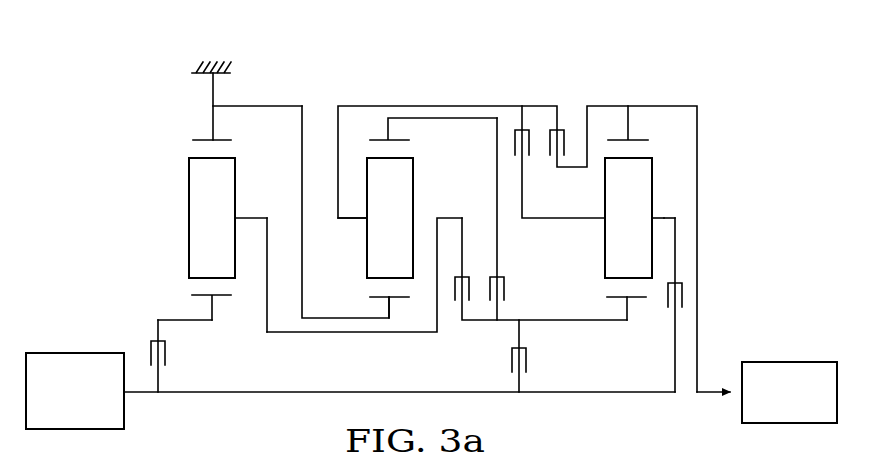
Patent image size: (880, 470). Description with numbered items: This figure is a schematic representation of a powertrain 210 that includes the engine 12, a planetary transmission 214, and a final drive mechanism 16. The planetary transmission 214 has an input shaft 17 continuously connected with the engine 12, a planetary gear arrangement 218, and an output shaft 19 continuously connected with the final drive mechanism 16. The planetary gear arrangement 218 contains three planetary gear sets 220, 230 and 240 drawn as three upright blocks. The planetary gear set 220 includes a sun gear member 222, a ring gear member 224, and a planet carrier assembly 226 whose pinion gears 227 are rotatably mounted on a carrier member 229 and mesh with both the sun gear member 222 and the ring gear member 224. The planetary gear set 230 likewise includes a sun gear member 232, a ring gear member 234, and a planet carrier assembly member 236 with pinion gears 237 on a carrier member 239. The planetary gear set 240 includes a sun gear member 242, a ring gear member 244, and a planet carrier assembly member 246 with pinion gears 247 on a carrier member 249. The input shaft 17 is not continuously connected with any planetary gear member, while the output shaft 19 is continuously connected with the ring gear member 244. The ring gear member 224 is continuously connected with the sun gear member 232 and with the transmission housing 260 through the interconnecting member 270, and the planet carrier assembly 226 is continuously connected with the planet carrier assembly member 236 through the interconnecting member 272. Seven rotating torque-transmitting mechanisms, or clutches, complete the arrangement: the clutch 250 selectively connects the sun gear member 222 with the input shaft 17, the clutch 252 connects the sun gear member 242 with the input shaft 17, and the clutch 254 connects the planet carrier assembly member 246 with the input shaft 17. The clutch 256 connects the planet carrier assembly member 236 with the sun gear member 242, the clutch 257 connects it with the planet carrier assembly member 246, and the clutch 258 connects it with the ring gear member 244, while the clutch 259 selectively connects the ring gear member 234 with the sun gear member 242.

The engine 12 is at (92, 338).
The final drive mechanism 16 is at (775, 343).
The input shaft 17 is at (133, 395).
The output shaft 19 is at (712, 395).
The powertrain 210 is at (137, 200).
The planetary transmission 214 is at (301, 163).
The planetary gear arrangement 218 is at (408, 84).
The planetary gear set 220 is at (204, 300).
The sun gear member 222 is at (222, 300).
The ring gear member 224 is at (210, 136).
The planet carrier assembly 226 is at (240, 210).
The pinion gears 227 is at (212, 218).
The carrier member 229 is at (262, 217).
The planetary gear set 230 is at (378, 300).
The sun gear member 232 is at (400, 300).
The ring gear member 234 is at (381, 136).
The planet carrier assembly member 236 is at (365, 228).
The pinion gears 237 is at (390, 218).
The carrier member 239 is at (364, 220).
The planetary gear set 240 is at (618, 300).
The sun gear member 242 is at (640, 300).
The ring gear member 244 is at (628, 138).
The planet carrier assembly member 246 is at (658, 211).
The pinion gears 247 is at (628, 218).
The carrier member 249 is at (661, 220).
The clutch 250 is at (152, 336).
The clutch 252 is at (531, 376).
The clutch 254 is at (689, 281).
The clutch 256 is at (478, 304).
The clutch 257 is at (514, 121).
The clutch 258 is at (549, 121).
The clutch 259 is at (508, 280).
The transmission housing 260 is at (199, 60).
The interconnecting member 270 is at (274, 105).
The interconnecting member 272 is at (293, 335).